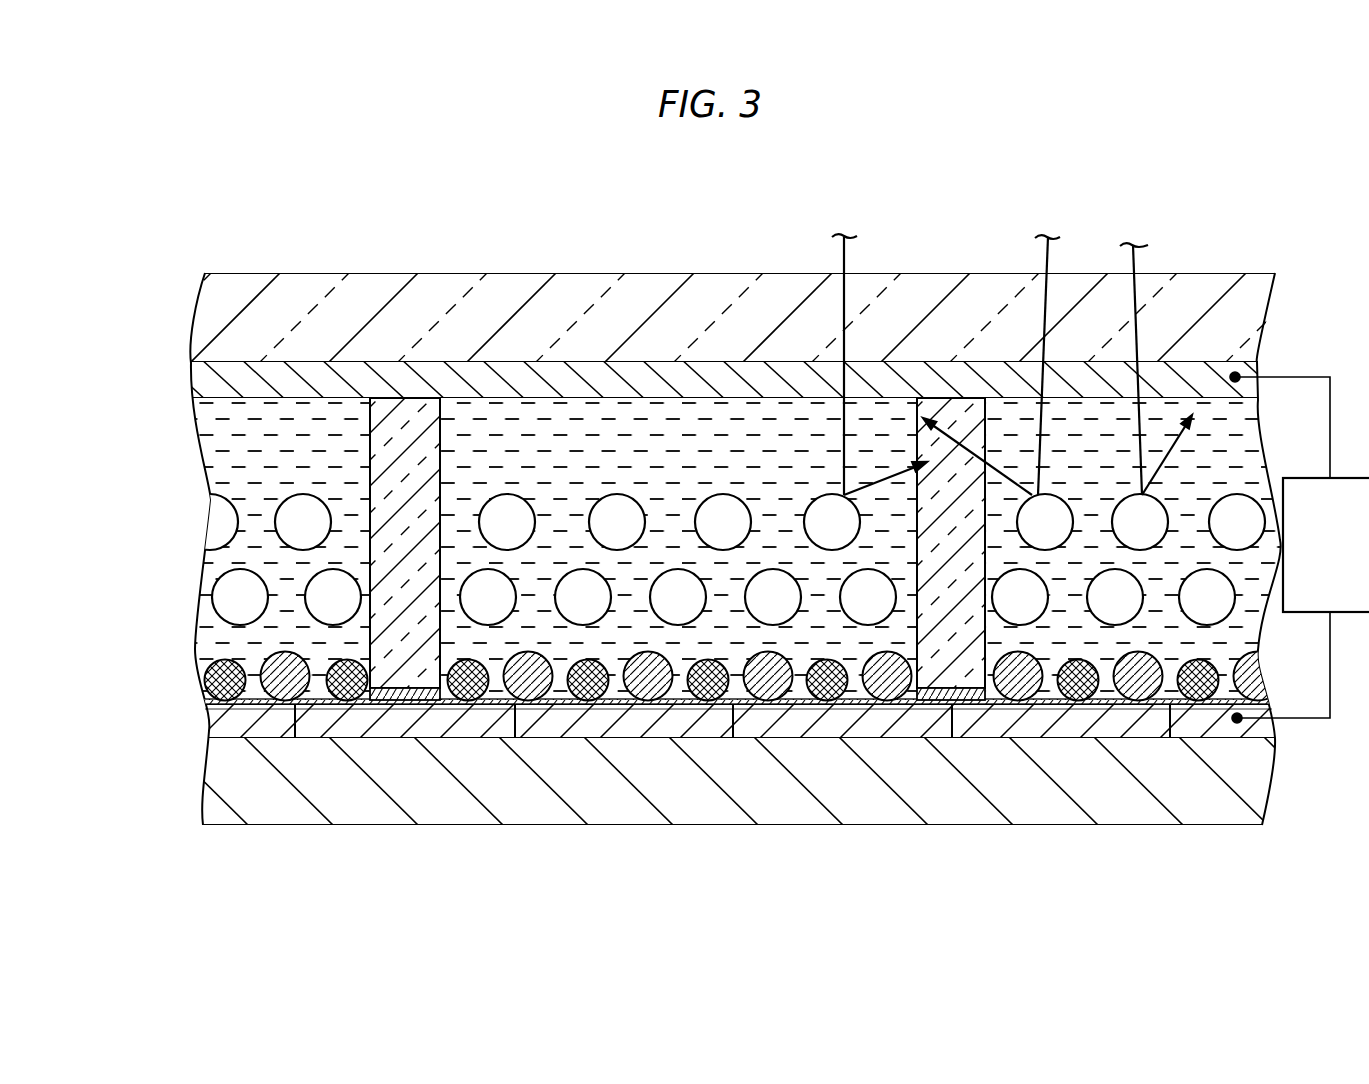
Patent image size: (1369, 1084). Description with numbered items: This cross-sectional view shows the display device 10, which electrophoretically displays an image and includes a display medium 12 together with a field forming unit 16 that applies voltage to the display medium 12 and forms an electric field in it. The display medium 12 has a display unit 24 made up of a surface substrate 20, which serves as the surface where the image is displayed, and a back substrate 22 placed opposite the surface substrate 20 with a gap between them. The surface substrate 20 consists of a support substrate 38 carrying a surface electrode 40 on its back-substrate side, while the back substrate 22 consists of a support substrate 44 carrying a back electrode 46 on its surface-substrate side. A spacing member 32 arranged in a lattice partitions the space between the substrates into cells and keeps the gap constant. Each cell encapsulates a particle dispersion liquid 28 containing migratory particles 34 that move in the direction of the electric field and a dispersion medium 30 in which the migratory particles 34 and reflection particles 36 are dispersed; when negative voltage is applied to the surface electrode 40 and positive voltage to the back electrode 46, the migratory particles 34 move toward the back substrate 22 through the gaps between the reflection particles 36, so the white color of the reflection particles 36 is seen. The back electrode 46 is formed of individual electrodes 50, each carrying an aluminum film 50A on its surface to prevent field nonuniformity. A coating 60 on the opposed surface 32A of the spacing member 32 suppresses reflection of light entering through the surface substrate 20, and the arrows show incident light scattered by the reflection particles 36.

The display device 10 is at (1281, 168).
The display medium 12 is at (1199, 208).
The field forming unit 16 is at (1315, 612).
The surface substrate 20 is at (97, 317).
The back substrate 22 is at (97, 712).
The display unit 24 is at (998, 256).
The particle dispersion liquid 28 is at (683, 875).
The dispersion medium 30 is at (735, 650).
The spacing member 32 is at (441, 398).
The opposed surface 32A is at (417, 688).
The migratory particles 34 is at (648, 680).
The reflection particles 36 is at (580, 575).
The support substrate 38 is at (207, 312).
The surface electrode 40 is at (195, 382).
The support substrate 44 is at (236, 774).
The back electrode 46 is at (207, 731).
The individual electrodes 50 is at (257, 727).
The aluminum film 50A is at (318, 725).
The coating 60 is at (393, 705).